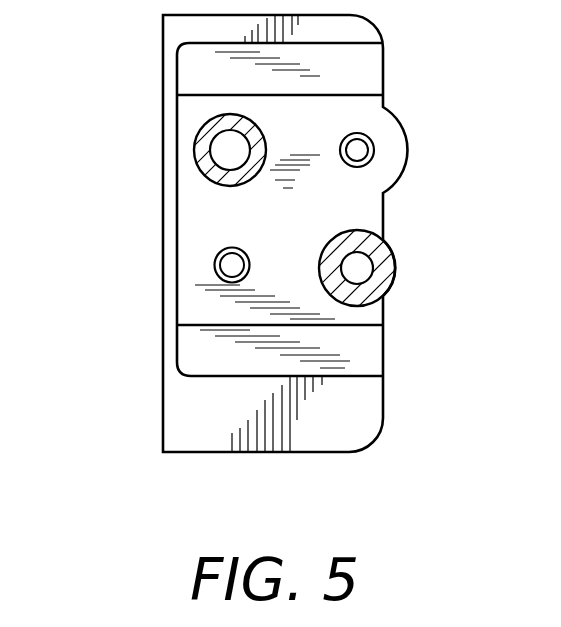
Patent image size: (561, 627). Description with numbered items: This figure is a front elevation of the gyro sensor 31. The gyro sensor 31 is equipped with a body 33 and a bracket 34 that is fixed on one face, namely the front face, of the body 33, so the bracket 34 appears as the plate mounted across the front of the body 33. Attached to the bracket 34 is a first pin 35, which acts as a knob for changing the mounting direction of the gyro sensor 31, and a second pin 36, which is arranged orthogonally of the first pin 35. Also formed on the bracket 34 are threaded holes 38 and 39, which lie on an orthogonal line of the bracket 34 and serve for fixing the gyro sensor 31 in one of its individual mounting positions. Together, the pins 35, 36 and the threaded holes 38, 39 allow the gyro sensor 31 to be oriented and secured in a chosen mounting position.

The gyro sensor 31 is at (397, 400).
The body 33 is at (295, 437).
The bracket 34 is at (197, 362).
The first pin 35 is at (197, 143).
The second pin 36 is at (393, 263).
The threaded hole 38 is at (213, 260).
The threaded hole 39 is at (375, 157).